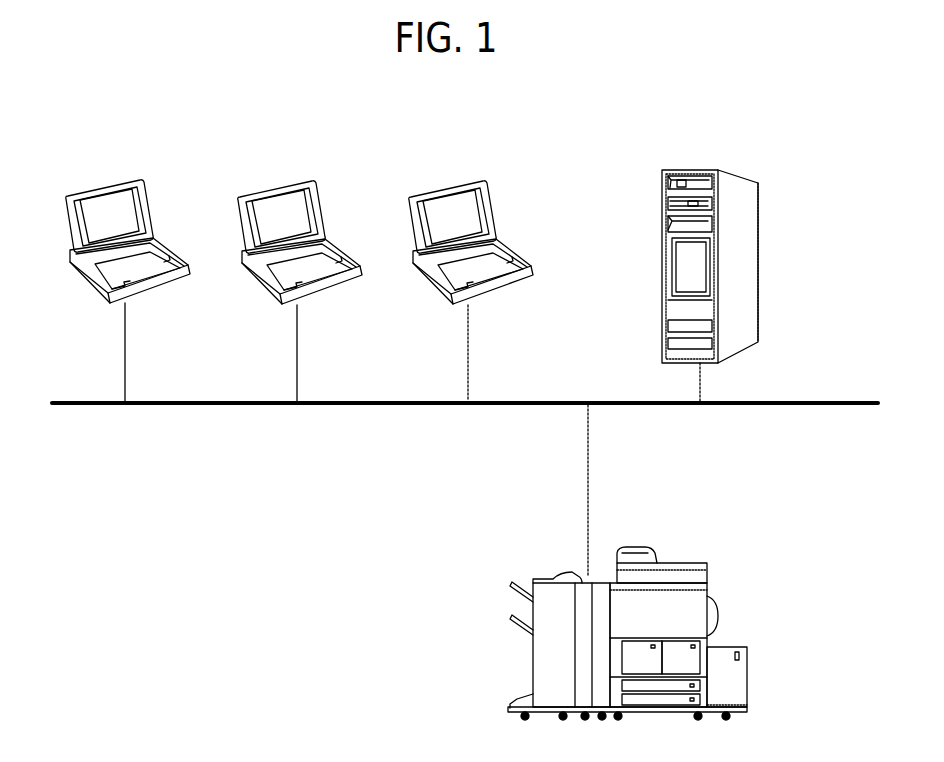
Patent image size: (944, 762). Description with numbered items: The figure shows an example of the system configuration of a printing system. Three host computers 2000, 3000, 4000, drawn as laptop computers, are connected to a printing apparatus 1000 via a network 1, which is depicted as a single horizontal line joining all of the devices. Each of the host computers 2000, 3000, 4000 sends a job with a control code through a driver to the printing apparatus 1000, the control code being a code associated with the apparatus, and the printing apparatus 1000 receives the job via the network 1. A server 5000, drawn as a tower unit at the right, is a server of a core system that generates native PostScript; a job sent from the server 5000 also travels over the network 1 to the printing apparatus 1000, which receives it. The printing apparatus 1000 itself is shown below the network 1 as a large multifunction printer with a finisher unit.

The network 1 is at (829, 401).
The printing apparatus 1000 is at (680, 563).
The host computer 2000 is at (106, 182).
The host computer 3000 is at (276, 184).
The host computer 4000 is at (448, 184).
The server 5000 is at (691, 168).